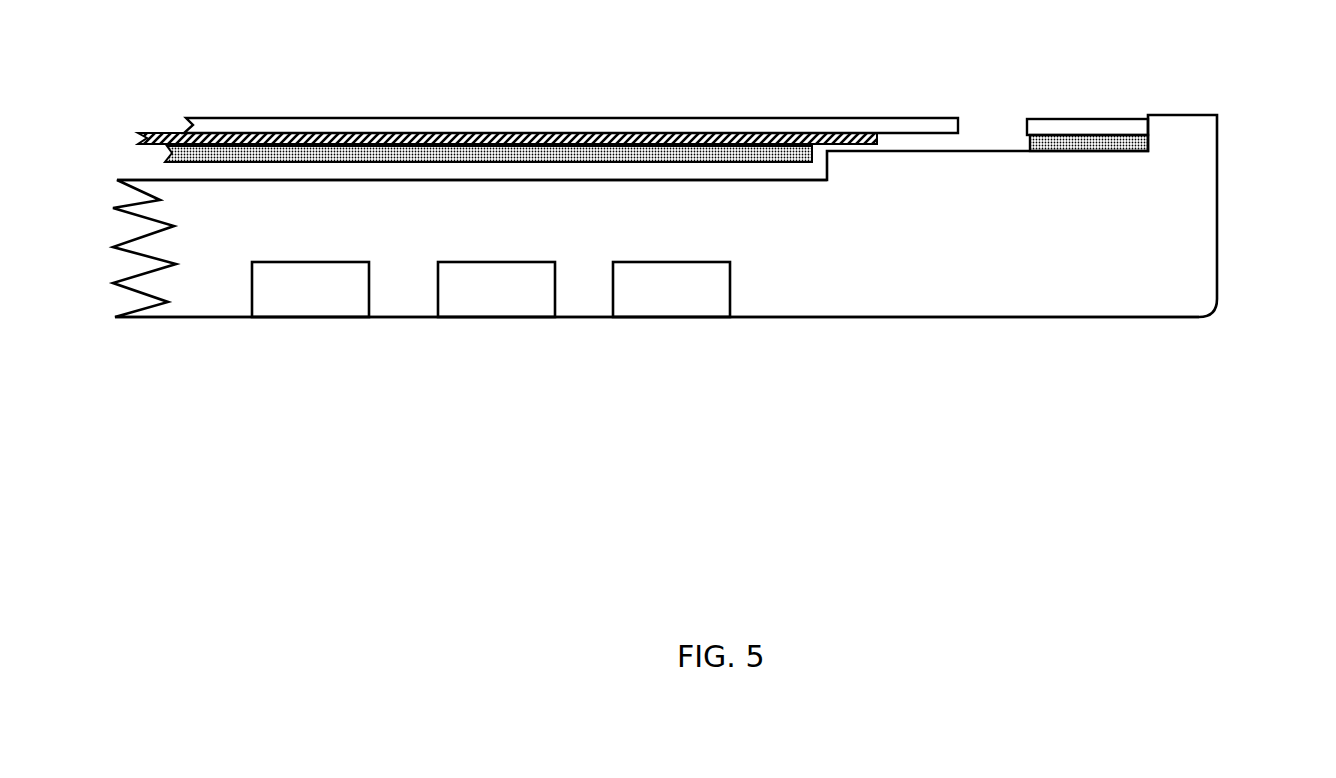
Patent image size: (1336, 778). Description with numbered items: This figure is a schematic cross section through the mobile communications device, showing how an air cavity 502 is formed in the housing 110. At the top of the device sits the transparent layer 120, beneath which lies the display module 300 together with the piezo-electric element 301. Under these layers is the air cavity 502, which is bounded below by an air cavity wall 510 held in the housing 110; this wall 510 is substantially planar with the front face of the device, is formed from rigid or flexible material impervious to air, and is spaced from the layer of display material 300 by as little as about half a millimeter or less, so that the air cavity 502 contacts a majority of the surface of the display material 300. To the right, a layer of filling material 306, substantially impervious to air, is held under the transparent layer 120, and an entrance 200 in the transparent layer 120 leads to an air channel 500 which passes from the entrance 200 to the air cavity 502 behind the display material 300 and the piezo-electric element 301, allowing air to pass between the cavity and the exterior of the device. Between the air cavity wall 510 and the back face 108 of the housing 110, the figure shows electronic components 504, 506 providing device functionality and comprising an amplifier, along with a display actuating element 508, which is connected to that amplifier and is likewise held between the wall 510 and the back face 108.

The housing 110 is at (1217, 210).
The back face 108 is at (768, 317).
The air cavity wall 510 is at (675, 182).
The transparent layer 120 is at (573, 118).
The display module 300 is at (477, 140).
The piezo-electric element 301 is at (358, 162).
The filling material 306 is at (1043, 138).
The entrance 200 is at (987, 118).
The air channel 500 is at (921, 140).
The air cavity 502 is at (429, 169).
The electronic component 504 is at (330, 300).
The electronic component 506 is at (516, 300).
The display actuating element 508 is at (691, 300).